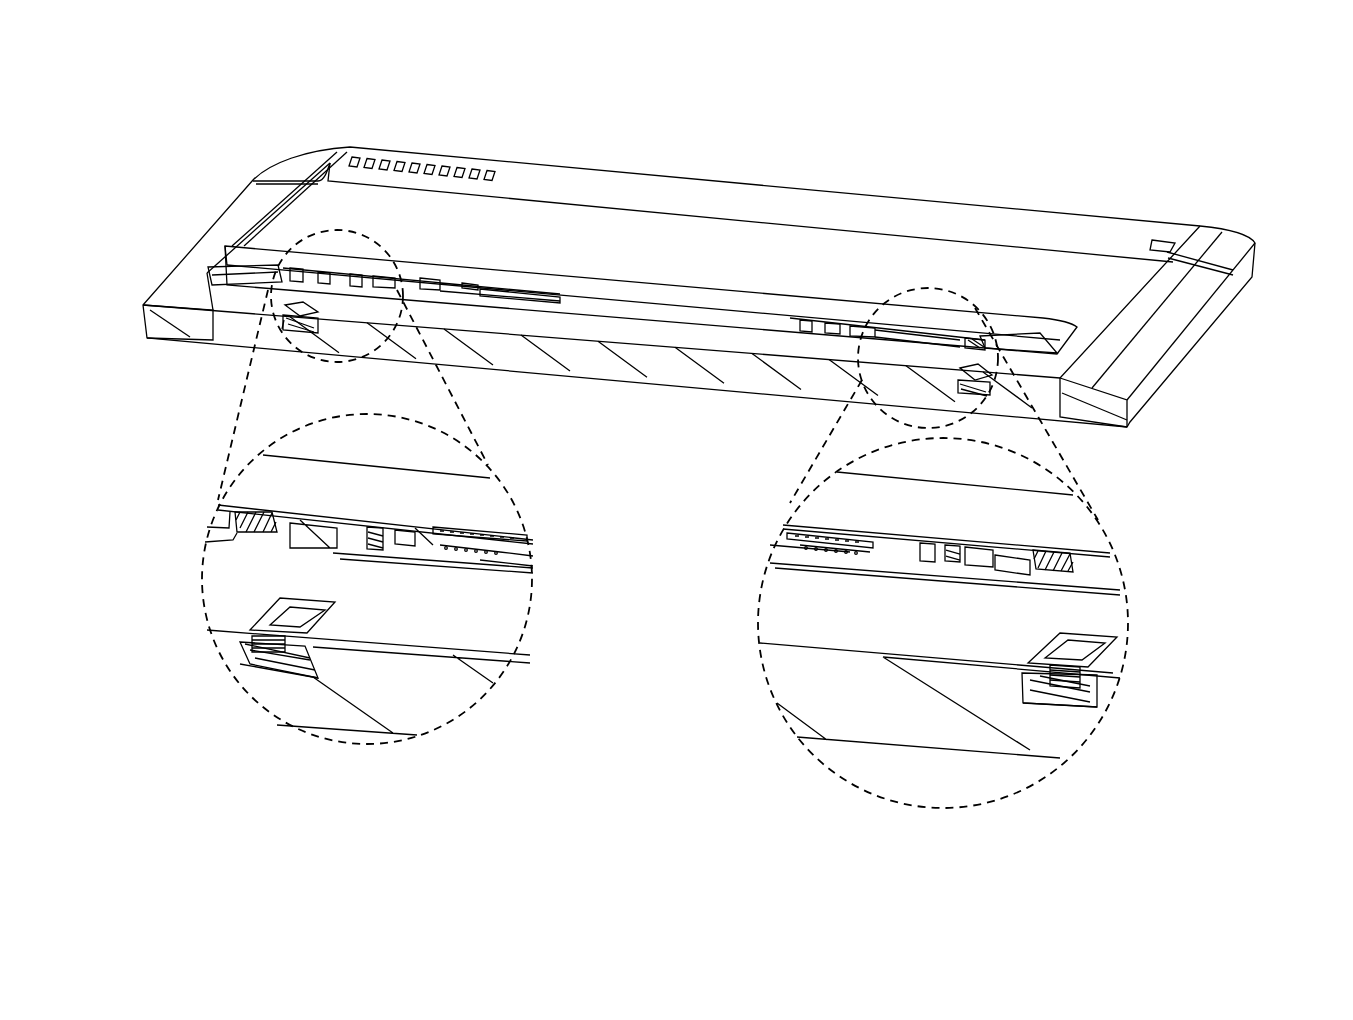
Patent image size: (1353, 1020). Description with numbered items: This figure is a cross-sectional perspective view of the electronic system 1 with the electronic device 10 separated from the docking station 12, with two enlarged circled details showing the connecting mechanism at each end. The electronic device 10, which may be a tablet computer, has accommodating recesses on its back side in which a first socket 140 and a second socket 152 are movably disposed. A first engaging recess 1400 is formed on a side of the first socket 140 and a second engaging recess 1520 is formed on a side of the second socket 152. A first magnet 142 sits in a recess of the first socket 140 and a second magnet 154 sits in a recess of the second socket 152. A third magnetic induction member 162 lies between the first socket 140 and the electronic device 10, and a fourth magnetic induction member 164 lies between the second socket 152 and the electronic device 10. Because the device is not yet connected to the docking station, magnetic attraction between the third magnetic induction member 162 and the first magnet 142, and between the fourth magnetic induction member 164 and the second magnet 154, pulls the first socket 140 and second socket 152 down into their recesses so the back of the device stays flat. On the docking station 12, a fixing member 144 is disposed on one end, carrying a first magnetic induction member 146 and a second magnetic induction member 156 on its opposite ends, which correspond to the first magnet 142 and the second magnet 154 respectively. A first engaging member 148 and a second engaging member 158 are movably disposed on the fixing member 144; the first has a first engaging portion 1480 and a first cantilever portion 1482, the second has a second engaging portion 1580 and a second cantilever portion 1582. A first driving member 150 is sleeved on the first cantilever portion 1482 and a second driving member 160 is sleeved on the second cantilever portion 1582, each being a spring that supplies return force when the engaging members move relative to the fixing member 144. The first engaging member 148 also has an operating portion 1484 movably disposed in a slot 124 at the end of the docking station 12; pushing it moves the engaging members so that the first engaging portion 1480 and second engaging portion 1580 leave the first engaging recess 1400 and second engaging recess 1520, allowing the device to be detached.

The electronic system 1 is at (1058, 160).
The electronic device 10 is at (790, 190).
The docking station 12 is at (755, 305).
The slot 124 is at (485, 290).
The operating portion 1484 is at (470, 284).
The first engaging member 148 is at (687, 307).
The fixing member 144 is at (713, 320).
The first magnetic induction member 146 is at (220, 523).
The first cantilever portion 1482 is at (493, 543).
The first engaging portion 1480 is at (290, 537).
The first driving member 150 is at (490, 547).
The first magnet 142 is at (277, 623).
The first engaging recess 1400 is at (300, 650).
The first socket 140 is at (267, 663).
The third magnetic induction member 162 is at (282, 673).
The second cantilever portion 1582 is at (830, 537).
The second driving member 160 is at (827, 547).
The second engaging member 158 is at (987, 547).
The second magnetic induction member 156 is at (1057, 547).
The second engaging portion 1580 is at (1023, 580).
The second magnet 154 is at (1083, 653).
The second engaging recess 1520 is at (1013, 673).
The second socket 152 is at (1077, 708).
The fourth magnetic induction member 164 is at (1058, 708).